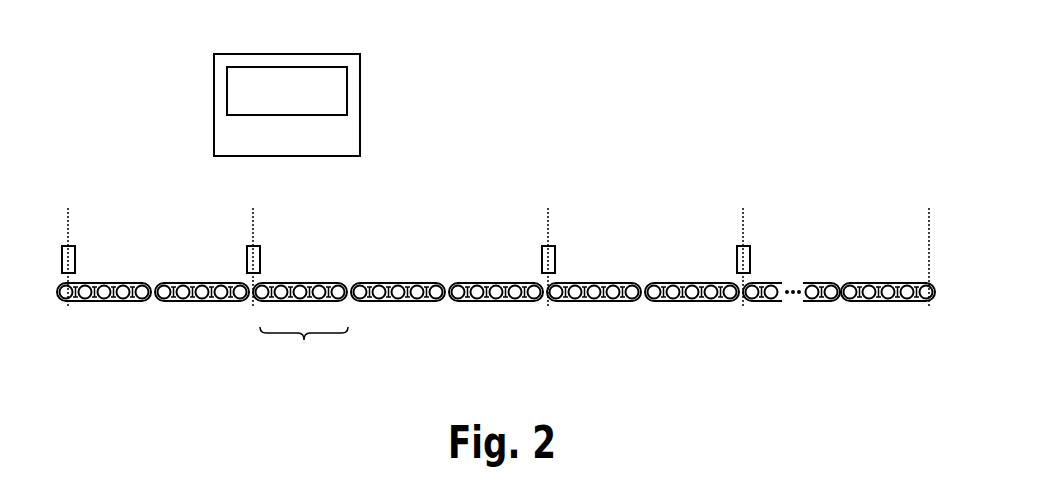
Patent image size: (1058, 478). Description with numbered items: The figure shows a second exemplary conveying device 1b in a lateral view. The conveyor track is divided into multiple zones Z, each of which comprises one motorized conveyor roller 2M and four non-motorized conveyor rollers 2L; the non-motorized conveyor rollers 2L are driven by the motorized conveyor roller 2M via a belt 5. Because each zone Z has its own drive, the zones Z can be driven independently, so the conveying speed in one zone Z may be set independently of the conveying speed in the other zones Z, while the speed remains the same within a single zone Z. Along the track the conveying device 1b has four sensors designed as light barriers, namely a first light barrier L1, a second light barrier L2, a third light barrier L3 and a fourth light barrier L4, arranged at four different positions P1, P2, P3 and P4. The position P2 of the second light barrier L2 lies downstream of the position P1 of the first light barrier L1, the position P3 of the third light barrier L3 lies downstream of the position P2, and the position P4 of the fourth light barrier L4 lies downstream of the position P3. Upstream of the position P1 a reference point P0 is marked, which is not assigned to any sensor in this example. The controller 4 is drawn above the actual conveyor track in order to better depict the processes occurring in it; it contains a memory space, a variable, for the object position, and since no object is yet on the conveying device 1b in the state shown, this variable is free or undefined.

The conveying device 1b is at (830, 70).
The controller 4 is at (222, 85).
The belt 5 is at (290, 283).
The motorized conveyor roller 2M is at (305, 287).
The non-motorized conveyor roller 2L is at (343, 287).
The zone Z is at (304, 352).
The reference point P0 is at (931, 242).
The position of the first light barrier P1 is at (744, 242).
The position of the second light barrier P2 is at (547, 242).
The position of the third light barrier P3 is at (253, 242).
The position of the fourth light barrier P4 is at (70, 242).
The first light barrier L1 is at (740, 257).
The second light barrier L2 is at (555, 252).
The third light barrier L3 is at (247, 257).
The fourth light barrier L4 is at (75, 257).